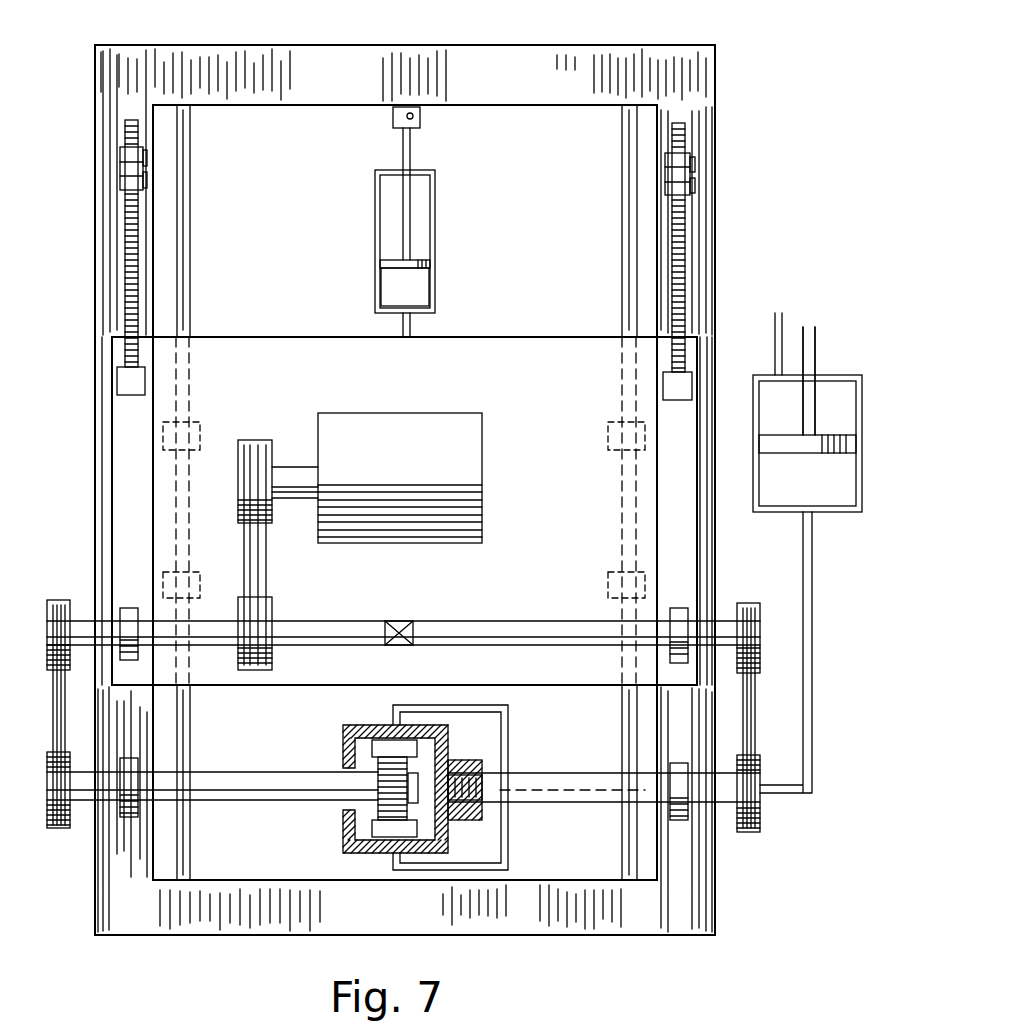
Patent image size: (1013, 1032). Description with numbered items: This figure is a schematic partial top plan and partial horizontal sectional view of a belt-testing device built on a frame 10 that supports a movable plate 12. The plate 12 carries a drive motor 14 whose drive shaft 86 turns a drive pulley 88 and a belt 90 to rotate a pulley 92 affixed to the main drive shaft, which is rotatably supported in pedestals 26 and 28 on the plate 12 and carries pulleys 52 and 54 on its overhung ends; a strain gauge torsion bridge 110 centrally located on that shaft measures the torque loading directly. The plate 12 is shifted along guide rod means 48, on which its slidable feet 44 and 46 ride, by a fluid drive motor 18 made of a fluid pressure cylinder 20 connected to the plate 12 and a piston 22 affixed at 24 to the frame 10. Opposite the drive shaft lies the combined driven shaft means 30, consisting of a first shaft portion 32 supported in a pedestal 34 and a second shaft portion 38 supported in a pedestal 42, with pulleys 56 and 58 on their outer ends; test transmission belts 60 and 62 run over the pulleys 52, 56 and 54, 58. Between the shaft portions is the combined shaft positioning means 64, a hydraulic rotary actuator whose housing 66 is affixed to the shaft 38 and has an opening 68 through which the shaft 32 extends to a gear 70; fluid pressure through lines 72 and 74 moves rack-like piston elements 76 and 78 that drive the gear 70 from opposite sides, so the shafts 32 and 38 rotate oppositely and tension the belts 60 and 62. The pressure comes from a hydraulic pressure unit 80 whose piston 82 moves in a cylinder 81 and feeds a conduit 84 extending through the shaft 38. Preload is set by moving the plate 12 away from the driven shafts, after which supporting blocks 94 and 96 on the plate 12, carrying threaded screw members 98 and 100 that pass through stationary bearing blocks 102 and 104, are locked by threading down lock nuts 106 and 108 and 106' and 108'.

The frame 10 is at (452, 46).
The movable plate 12 is at (277, 337).
The drive motor 14 is at (388, 486).
The fluid drive motor 18 is at (366, 216).
The fluid pressure cylinder 20 is at (376, 292).
The piston 22 is at (380, 264).
The piston attachment point 24 is at (418, 117).
The pedestal 26 is at (128, 608).
The pedestal 28 is at (678, 608).
The combined driven shaft means 30 is at (534, 814).
The first shaft portion 32 is at (222, 772).
The pedestal 34 is at (128, 758).
The second shaft portion 38 is at (572, 775).
The pedestal 42 is at (680, 763).
The slidable foot 44 is at (165, 577).
The slidable foot 46 is at (165, 437).
The guide rod means 48 is at (191, 226).
The pulley 52 is at (50, 600).
The pulley 54 is at (760, 625).
The pulley 56 is at (52, 829).
The pulley 58 is at (760, 768).
The transmission belt 60 is at (50, 712).
The transmission belt 62 is at (752, 697).
The combined shaft positioning means 64 is at (422, 786).
The housing 66 is at (343, 730).
The opening 68 is at (378, 800).
The gear 70 is at (378, 790).
The line 72 is at (433, 870).
The line 74 is at (440, 708).
The rack-like piston element 76 is at (375, 830).
The rack-like piston element 78 is at (385, 745).
The hydraulic pressure unit 80 is at (750, 512).
The cylinder 81 is at (758, 440).
The piston 82 is at (765, 447).
The conduit 84 is at (803, 565).
The drive shaft 86 is at (290, 467).
The drive pulley 88 is at (238, 448).
The belt 90 is at (260, 562).
The pulley 92 is at (272, 603).
The supporting block 94 is at (117, 385).
The supporting block 96 is at (679, 401).
The threaded screw member 98 is at (125, 268).
The threaded screw member 100 is at (686, 232).
The bearing block 102 is at (119, 171).
The bearing block 104 is at (690, 177).
The lock nut 106 is at (89, 192).
The lock nut 106' is at (739, 197).
The lock nut 108 is at (90, 152).
The lock nut 108' is at (738, 151).
The strain gauge torsion bridge 110 is at (400, 620).